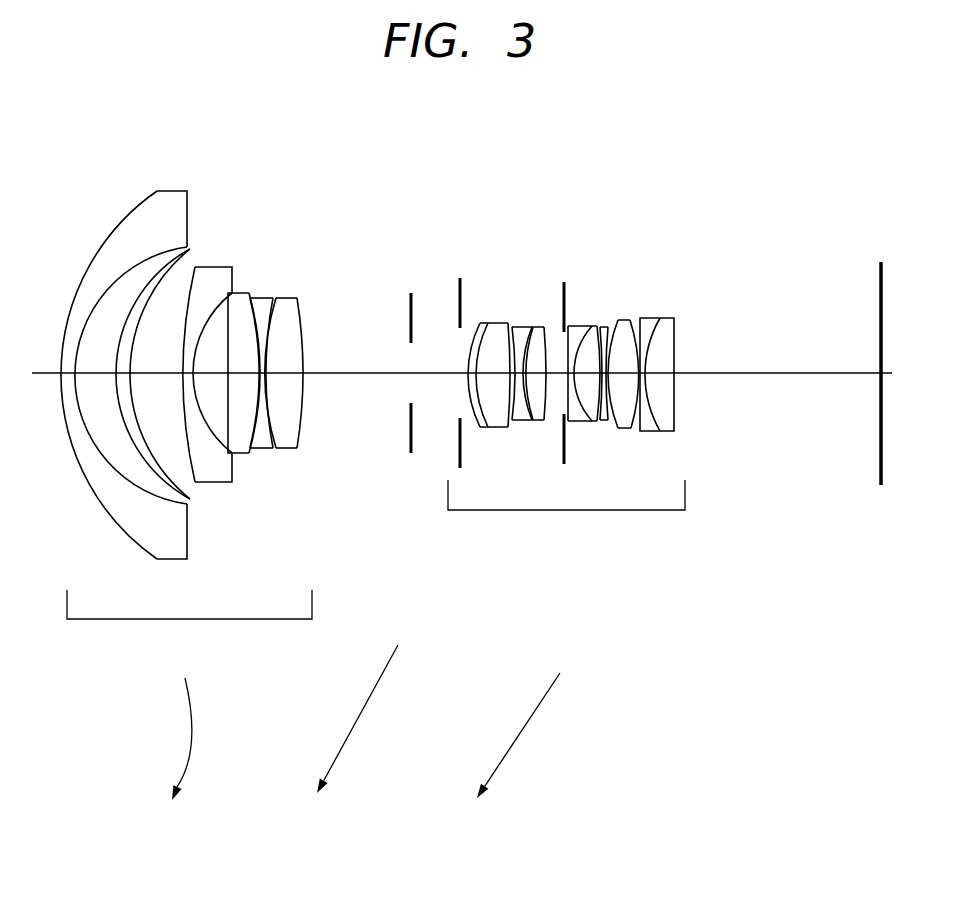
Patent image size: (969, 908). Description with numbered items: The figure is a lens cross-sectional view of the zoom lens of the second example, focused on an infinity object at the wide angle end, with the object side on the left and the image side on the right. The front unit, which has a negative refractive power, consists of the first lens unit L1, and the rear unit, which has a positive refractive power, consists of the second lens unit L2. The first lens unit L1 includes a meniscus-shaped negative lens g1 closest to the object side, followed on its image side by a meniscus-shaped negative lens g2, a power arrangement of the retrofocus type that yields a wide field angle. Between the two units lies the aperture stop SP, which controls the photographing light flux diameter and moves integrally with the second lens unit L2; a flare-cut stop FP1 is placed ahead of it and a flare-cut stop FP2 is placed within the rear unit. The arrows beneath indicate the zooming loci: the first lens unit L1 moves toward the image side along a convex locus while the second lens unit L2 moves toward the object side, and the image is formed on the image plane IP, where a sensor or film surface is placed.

The first lens unit L1 is at (323, 148).
The second lens unit L2 is at (688, 243).
The negative lens g1 is at (131, 236).
The negative lens g2 is at (176, 266).
The flare-cut stop FP1 is at (409, 305).
The aperture stop SP is at (455, 288).
The flare-cut stop FP2 is at (566, 291).
The image plane IP is at (876, 286).